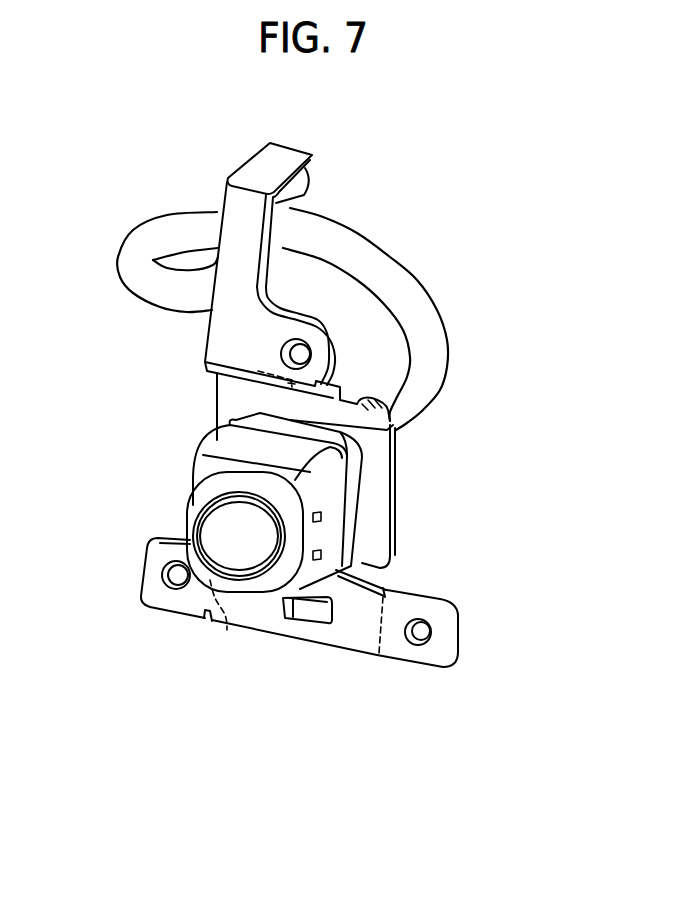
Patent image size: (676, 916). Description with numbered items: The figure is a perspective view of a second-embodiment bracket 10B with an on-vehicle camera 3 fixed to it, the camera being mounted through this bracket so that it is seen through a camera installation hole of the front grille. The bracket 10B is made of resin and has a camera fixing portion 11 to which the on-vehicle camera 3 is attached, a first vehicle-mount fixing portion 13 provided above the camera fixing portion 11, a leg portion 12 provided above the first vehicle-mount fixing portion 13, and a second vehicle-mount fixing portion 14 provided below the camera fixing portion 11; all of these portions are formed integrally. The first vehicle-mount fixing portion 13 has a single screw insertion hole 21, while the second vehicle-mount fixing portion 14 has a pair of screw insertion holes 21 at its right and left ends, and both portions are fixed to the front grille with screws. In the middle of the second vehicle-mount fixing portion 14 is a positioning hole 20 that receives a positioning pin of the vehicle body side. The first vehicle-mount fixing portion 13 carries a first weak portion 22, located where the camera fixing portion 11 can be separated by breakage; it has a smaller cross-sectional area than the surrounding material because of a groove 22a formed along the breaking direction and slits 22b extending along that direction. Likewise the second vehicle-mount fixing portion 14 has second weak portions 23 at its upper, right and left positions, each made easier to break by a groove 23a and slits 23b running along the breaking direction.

The on-vehicle camera 3 is at (210, 467).
The bracket 10B is at (310, 481).
The camera fixing portion 11 is at (380, 473).
The leg portion 12 is at (233, 230).
The first vehicle-mount fixing portion 13 is at (283, 327).
The second vehicle-mount fixing portion 14 is at (303, 635).
The positioning hole 20 is at (312, 607).
The screw insertion hole 21 is at (305, 350).
The first weak portion 22 is at (523, 352).
The groove 22a is at (362, 410).
The slits 22b is at (342, 391).
The second weak portion 23 is at (149, 667).
The groove 23a is at (227, 630).
The slits 23b is at (207, 617).